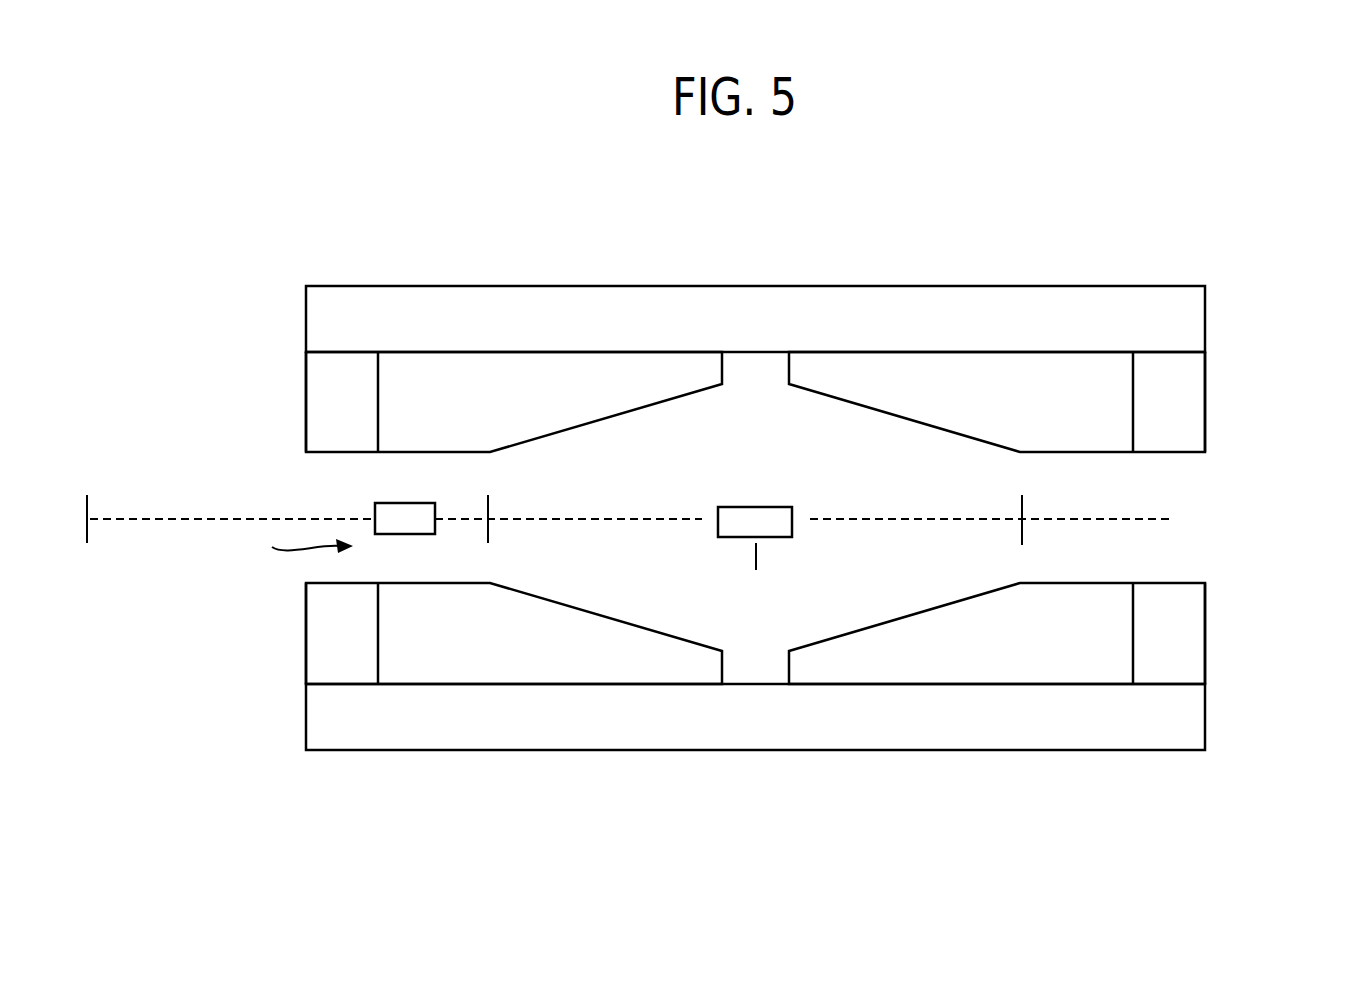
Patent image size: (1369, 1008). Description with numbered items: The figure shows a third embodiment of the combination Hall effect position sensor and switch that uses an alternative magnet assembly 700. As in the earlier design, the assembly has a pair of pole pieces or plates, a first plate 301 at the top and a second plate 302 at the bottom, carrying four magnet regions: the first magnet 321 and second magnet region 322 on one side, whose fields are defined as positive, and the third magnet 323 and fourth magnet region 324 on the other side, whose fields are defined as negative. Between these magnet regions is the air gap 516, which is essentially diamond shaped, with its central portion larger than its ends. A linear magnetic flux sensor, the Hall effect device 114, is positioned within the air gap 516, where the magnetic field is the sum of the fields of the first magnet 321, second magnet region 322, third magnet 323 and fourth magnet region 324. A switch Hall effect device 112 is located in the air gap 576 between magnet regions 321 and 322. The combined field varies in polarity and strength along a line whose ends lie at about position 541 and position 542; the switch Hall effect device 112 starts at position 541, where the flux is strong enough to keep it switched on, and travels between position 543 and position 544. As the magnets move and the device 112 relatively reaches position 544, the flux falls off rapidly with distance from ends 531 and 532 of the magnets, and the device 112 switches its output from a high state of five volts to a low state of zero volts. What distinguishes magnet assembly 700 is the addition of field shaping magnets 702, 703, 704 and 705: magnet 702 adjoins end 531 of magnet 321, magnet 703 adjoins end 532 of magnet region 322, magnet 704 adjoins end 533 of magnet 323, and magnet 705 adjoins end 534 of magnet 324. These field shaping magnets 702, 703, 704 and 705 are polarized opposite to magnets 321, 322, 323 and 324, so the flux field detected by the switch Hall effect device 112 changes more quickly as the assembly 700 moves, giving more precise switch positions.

The magnet assembly 700 is at (260, 372).
The first plate 301 is at (578, 313).
The second plate 302 is at (660, 750).
The first magnet 321 is at (480, 387).
The second magnet region 322 is at (487, 642).
The third magnet 323 is at (980, 378).
The fourth magnet region 324 is at (1000, 682).
The end of magnet 321 531 is at (390, 370).
The end of magnet region 322 532 is at (390, 677).
The end of magnet 323 533 is at (1122, 370).
The end of magnet 324 534 is at (1115, 667).
The field shaping magnet 702 is at (306, 368).
The field shaping magnet 703 is at (306, 670).
The field shaping magnet 704 is at (1205, 410).
The field shaping magnet 705 is at (1205, 642).
The switch Hall effect device 112 is at (375, 512).
The Hall effect device 114 is at (735, 507).
The air gap 516 is at (622, 578).
The position 541 is at (488, 510).
The position 542 is at (1024, 509).
The position 543 is at (756, 565).
The position 544 is at (87, 532).
The air gap 576 is at (280, 551).